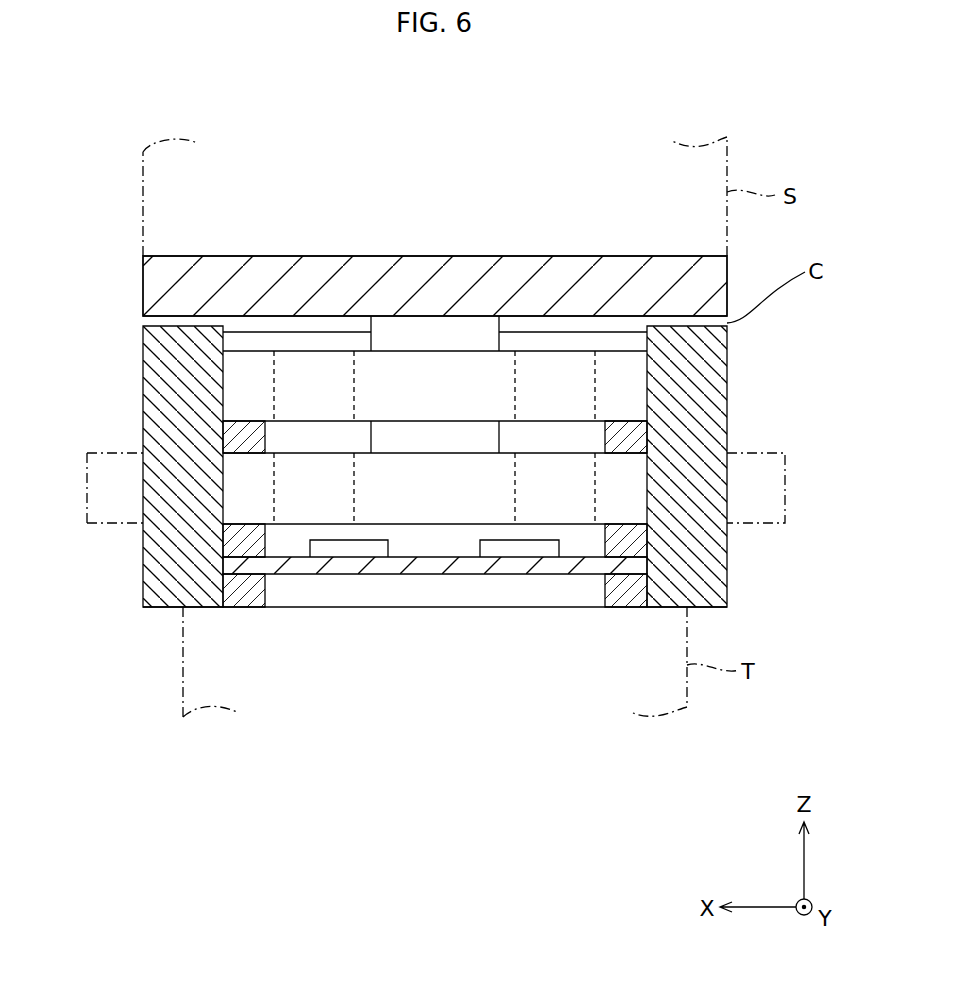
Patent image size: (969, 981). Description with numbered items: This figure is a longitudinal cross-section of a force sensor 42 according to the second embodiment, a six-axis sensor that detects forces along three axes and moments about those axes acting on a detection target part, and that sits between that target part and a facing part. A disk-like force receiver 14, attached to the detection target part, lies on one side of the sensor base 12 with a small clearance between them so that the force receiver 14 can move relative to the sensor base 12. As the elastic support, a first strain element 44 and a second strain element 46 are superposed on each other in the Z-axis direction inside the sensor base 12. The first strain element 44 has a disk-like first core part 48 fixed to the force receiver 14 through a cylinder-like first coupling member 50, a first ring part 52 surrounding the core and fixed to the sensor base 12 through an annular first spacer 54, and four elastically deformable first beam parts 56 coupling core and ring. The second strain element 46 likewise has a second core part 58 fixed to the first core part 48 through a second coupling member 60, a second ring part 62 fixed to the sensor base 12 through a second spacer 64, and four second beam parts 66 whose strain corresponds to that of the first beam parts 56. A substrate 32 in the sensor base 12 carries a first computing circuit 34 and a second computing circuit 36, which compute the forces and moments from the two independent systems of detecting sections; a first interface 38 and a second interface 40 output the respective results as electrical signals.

The sensor base 12 is at (141, 348).
The force receiver 14 is at (294, 254).
The substrate 32 is at (442, 566).
The first computing circuit 34 is at (520, 550).
The second computing circuit 36 is at (358, 550).
The first interface 38 is at (785, 452).
The second interface 40 is at (87, 453).
The force sensor 42 is at (787, 128).
The first strain element 44 is at (329, 348).
The second strain element 46 is at (411, 530).
The first core part 48 is at (515, 370).
The first coupling member 50 is at (458, 327).
The first ring part 52 is at (204, 355).
The first spacer 54 is at (230, 440).
The first beam parts 56 is at (274, 358).
The second core part 58 is at (513, 490).
The second coupling member 60 is at (458, 437).
The second ring part 62 is at (222, 497).
The second spacer 64 is at (235, 541).
The second beam parts 66 is at (274, 503).